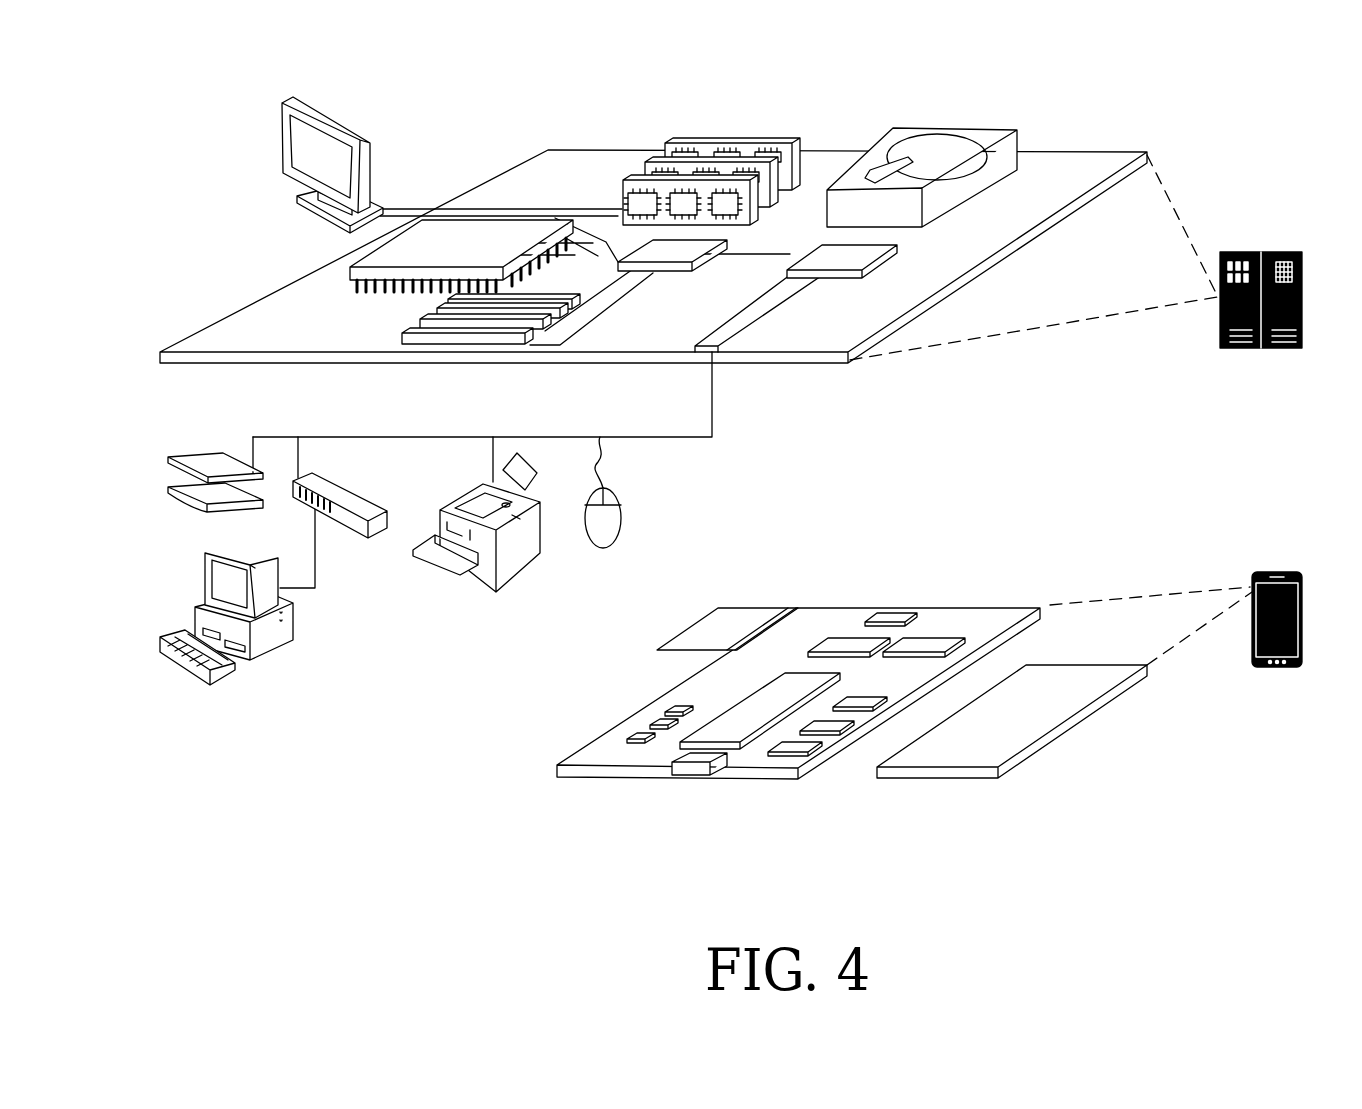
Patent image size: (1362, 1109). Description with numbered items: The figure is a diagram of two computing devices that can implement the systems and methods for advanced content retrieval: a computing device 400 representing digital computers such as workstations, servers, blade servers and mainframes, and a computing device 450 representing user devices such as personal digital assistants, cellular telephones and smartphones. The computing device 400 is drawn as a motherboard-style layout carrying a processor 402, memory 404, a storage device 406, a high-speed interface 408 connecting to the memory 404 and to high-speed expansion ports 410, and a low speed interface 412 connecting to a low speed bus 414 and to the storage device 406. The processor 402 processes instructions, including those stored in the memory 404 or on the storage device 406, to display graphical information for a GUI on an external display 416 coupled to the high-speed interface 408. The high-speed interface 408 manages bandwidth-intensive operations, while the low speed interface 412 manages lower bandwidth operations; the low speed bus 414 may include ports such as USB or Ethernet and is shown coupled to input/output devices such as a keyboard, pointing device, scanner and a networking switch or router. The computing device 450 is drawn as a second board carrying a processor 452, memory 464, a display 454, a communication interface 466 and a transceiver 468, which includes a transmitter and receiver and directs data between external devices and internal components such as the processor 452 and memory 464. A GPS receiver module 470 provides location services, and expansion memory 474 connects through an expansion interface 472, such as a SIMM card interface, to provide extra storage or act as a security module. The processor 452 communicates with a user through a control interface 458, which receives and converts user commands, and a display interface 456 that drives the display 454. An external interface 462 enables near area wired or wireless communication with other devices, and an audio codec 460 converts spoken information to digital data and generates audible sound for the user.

The computing device 400 is at (1284, 252).
The processor 402 is at (352, 270).
The memory 404 is at (676, 143).
The storage device 406 is at (917, 134).
The high-speed interface 408 is at (640, 248).
The high-speed expansion ports 410 is at (418, 327).
The low speed interface 412 is at (823, 257).
The low speed bus 414 is at (720, 353).
The display 416 is at (282, 103).
The computing device 450 is at (1272, 572).
The processor 452 is at (731, 736).
The display 454 is at (965, 753).
The display interface 456 is at (785, 755).
The control interface 458 is at (838, 733).
The audio codec 460 is at (862, 708).
The external interface 462 is at (697, 758).
The memory 464 is at (660, 723).
The communication interface 466 is at (850, 645).
The transceiver 468 is at (928, 645).
The GPS receiver module 470 is at (900, 612).
The expansion interface 472 is at (795, 620).
The expansion memory 474 is at (713, 621).